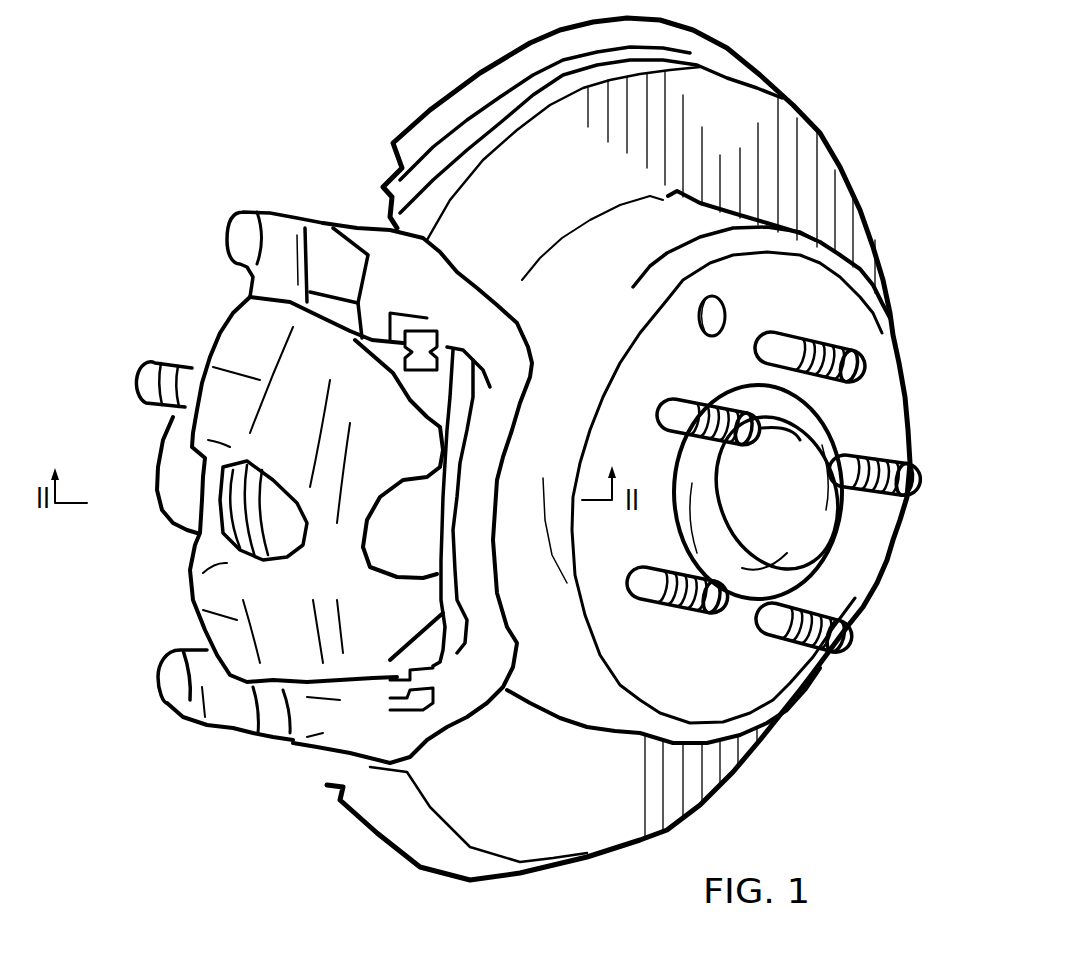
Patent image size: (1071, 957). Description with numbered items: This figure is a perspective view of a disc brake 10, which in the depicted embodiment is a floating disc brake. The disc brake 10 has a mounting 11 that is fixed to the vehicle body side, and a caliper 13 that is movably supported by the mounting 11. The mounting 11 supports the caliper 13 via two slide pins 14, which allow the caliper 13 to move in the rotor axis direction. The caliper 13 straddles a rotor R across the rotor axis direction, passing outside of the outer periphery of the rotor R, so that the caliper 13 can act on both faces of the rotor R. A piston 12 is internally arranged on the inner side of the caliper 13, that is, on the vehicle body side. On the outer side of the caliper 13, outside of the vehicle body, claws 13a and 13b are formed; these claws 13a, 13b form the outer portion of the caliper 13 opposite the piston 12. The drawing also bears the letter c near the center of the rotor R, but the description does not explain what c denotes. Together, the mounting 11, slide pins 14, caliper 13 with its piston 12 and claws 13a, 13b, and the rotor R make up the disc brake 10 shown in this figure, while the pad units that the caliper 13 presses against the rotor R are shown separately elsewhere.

The disc brake 10 is at (196, 108).
The rotor R is at (740, 112).
The mounting 11 is at (410, 288).
The piston 12 is at (175, 462).
The caliper 13 is at (277, 655).
The claw 13a is at (427, 447).
The claw 13b is at (430, 597).
The slide pin 14 is at (227, 227).
The center c is at (756, 493).